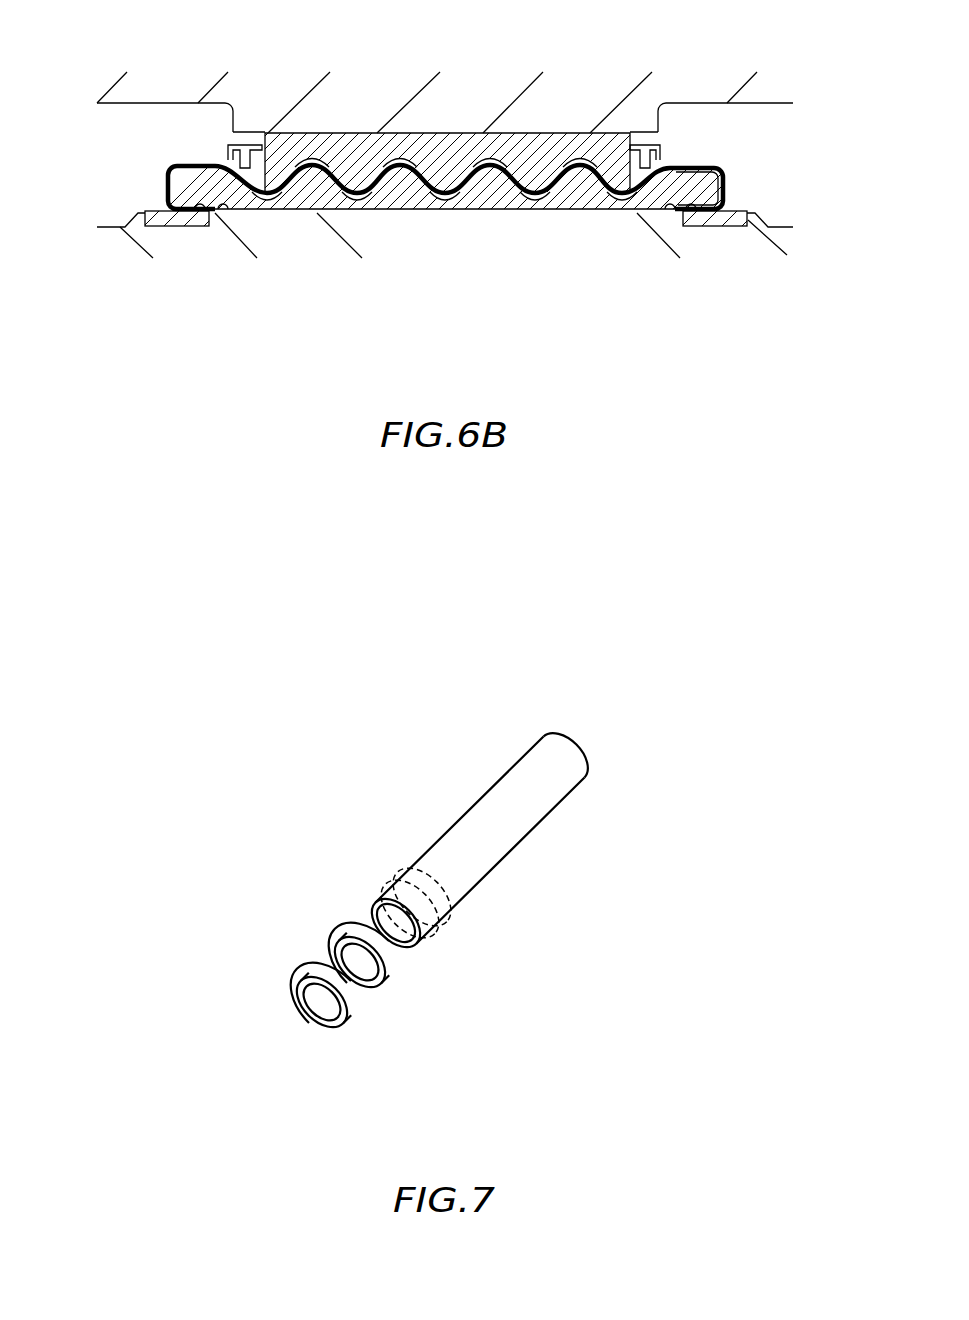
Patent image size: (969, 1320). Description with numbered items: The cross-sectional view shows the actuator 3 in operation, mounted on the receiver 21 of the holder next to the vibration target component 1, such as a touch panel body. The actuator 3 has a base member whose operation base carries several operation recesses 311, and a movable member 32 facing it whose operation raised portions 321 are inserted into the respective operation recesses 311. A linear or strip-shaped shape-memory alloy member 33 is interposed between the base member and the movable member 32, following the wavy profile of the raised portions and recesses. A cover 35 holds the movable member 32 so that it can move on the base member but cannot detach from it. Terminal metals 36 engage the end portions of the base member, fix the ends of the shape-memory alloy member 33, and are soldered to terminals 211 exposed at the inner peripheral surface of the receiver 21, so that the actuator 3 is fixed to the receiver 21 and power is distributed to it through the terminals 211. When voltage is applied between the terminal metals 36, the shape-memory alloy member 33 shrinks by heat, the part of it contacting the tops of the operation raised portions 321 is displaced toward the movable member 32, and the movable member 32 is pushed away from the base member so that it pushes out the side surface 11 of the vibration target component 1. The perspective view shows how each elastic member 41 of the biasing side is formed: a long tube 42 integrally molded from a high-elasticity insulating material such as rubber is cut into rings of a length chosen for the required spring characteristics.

In FIG. 6B, the vibration target component 1 is at (766, 98).
In FIG. 6B, the one side surface 11 is at (337, 133).
In FIG. 6B, the receiver 21 is at (128, 217).
In FIG. 6B, the terminal 211 is at (177, 227).
In FIG. 6B, the actuator 3 is at (312, 208).
In FIG. 6B, the movable member 32 is at (515, 133).
In FIG. 6B, the operation raised portion 321 is at (438, 180).
In FIG. 6B, the operation recess 311 is at (458, 212).
In FIG. 6B, the shape-memory alloy member 33 is at (443, 203).
In FIG. 6B, the cover 35 is at (650, 140).
In FIG. 6B, the terminal metal 36 is at (733, 183).
In FIG. 7, the elastic member 41 is at (443, 917).
In FIG. 7, the long tube 42 is at (505, 853).